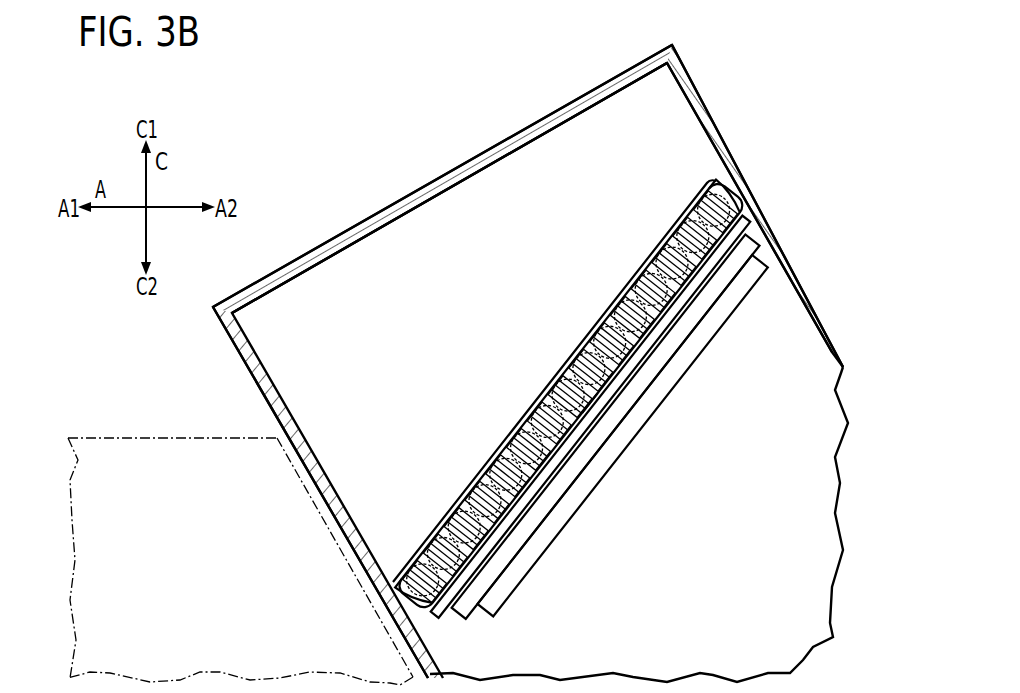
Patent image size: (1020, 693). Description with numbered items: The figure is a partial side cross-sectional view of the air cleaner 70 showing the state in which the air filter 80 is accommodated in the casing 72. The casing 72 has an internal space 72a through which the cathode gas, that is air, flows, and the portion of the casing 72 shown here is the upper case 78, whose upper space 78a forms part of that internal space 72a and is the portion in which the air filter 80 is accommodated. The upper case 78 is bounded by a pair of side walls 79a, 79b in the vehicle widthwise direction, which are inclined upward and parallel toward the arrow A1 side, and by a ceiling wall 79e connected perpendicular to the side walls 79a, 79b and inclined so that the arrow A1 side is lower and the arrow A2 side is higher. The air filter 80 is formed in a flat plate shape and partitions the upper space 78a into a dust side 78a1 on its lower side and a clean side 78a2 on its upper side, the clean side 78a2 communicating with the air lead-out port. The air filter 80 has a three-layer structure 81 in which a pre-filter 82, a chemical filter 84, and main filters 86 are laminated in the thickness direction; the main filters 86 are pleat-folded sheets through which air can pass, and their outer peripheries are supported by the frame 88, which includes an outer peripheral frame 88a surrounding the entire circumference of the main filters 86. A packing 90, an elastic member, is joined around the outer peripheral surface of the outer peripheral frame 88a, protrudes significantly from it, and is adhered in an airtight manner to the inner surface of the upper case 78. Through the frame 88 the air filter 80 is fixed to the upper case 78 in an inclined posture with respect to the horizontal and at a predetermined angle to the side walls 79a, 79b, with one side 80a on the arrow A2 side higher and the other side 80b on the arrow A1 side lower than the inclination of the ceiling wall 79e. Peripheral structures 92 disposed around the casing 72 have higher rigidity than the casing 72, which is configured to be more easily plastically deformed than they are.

The air cleaner 70 is at (305, 68).
The casing 72 is at (525, 361).
The internal space 72a is at (375, 278).
The upper case 78 is at (437, 150).
The upper space 78a is at (550, 198).
The dust side 78a1 is at (780, 318).
The clean side 78a2 is at (665, 95).
The side wall 79a is at (712, 120).
The side wall 79b is at (249, 364).
The ceiling wall 79e is at (505, 139).
The air filter 80 is at (569, 319).
The one side of air filter 80a is at (727, 196).
The other side of air filter 80b is at (413, 595).
The three-layer structure 81 is at (568, 395).
The pre-filter 82 is at (633, 365).
The chemical filter 84 is at (606, 426).
The main filter 86 is at (589, 403).
The frame 88 is at (591, 417).
The outer peripheral frame 88a is at (591, 417).
The packing 90 is at (570, 396).
The peripheral structures 92 is at (127, 438).